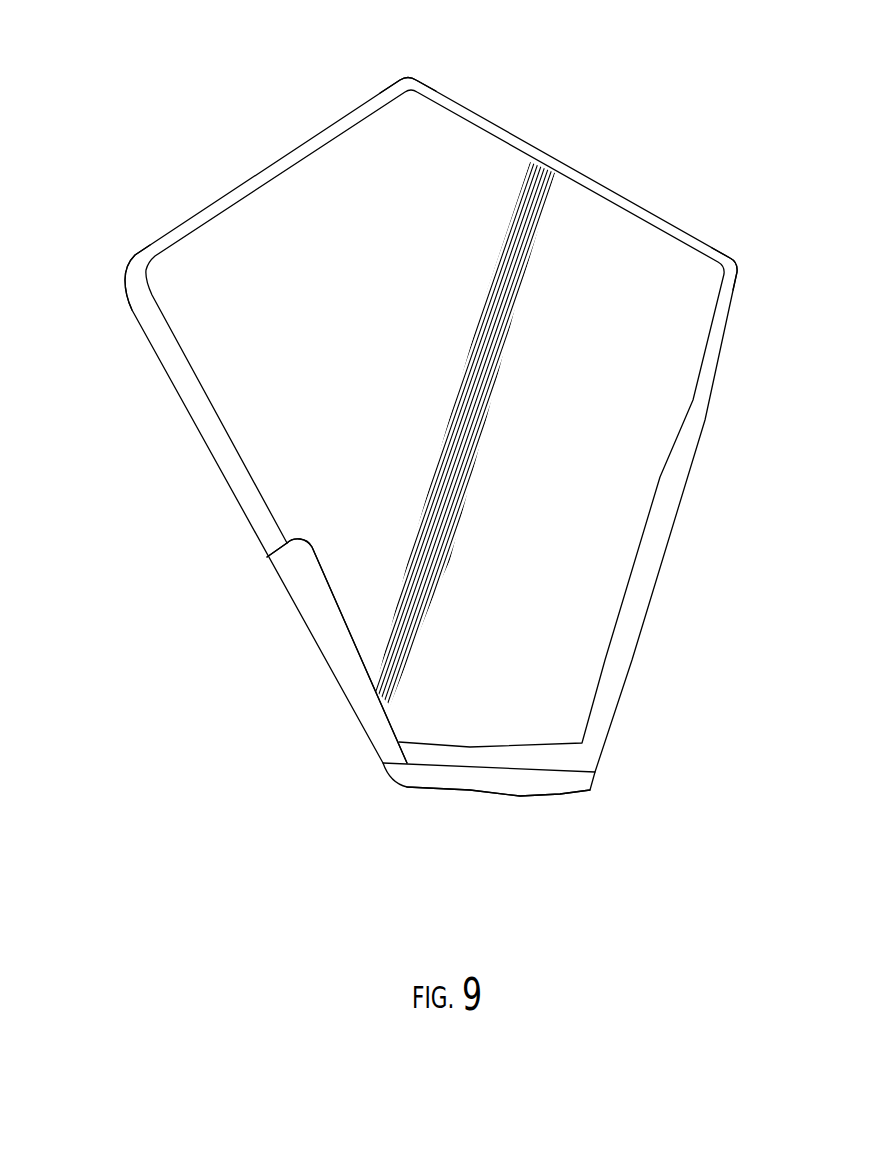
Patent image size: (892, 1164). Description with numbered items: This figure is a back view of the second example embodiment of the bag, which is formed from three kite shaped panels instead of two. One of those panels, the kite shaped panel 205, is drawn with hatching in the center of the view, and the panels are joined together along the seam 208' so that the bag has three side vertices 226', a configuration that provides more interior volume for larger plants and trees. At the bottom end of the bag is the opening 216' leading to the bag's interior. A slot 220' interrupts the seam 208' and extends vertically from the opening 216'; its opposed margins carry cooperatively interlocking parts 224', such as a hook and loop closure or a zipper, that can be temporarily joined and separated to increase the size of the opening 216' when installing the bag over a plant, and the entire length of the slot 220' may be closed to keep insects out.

The kite shaped panel 205 is at (435, 361).
The seam 208' is at (431, 437).
The opening 216' is at (498, 812).
The slot 220' is at (322, 651).
The interlocking parts 224' is at (433, 53).
The side vertices 226' is at (434, 253).